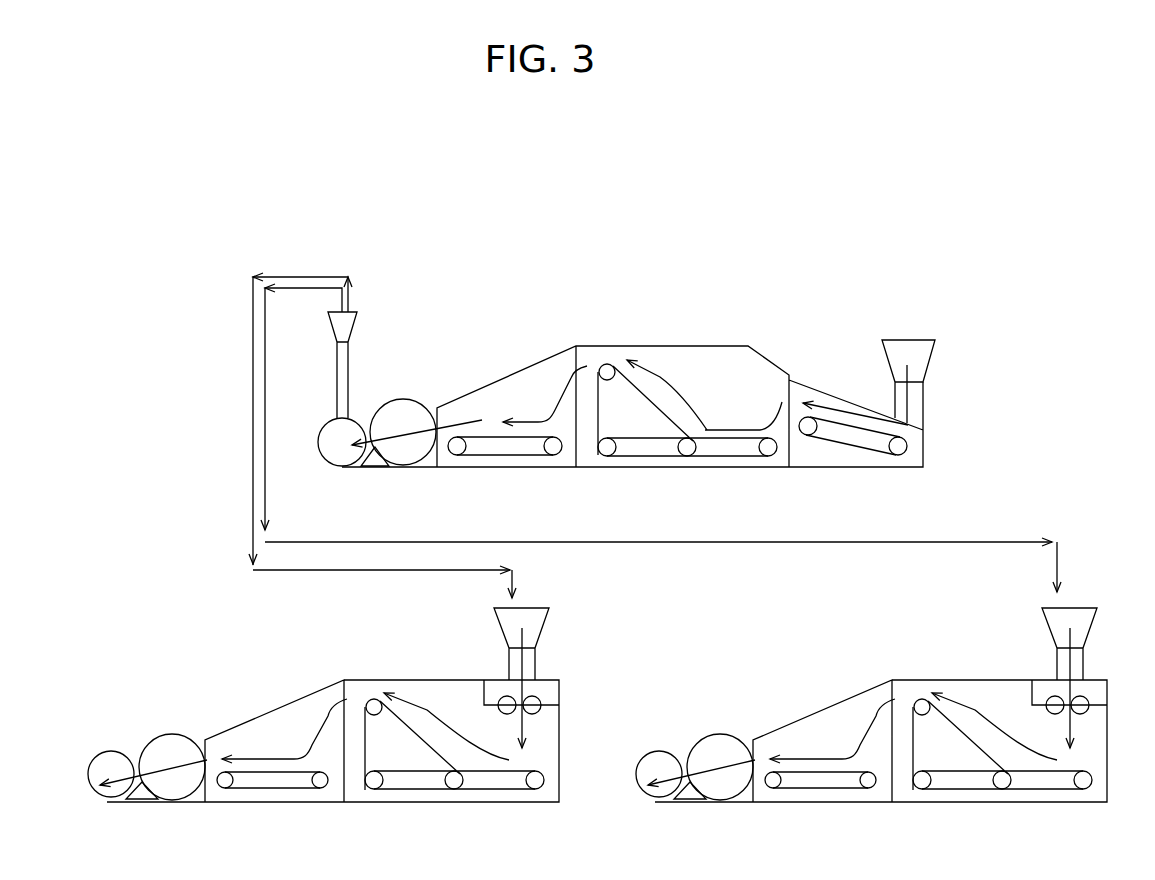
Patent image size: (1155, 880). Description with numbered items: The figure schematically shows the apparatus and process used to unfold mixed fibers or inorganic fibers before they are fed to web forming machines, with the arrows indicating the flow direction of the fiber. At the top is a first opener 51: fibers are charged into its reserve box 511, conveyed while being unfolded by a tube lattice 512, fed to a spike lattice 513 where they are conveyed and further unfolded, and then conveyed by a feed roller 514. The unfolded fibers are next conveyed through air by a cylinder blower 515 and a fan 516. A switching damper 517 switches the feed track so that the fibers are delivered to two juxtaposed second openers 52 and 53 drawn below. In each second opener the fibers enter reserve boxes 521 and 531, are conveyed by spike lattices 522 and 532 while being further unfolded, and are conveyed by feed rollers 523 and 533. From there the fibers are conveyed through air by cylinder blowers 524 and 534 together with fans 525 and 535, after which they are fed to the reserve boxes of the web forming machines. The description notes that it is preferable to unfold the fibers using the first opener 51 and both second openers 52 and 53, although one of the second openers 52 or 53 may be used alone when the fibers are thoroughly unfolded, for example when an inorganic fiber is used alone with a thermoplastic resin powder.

The first opener 51 is at (808, 297).
The reserve box 511 is at (930, 355).
The tube lattice 512 is at (852, 447).
The spike lattice 513 is at (637, 445).
The feed roller 514 is at (507, 445).
The cylinder blower 515 is at (402, 452).
The fan 516 is at (330, 440).
The switching damper 517 is at (348, 338).
The second opener 52 is at (943, 640).
The reserve box 521 is at (1058, 635).
The spike lattice 522 is at (967, 777).
The feed roller 523 is at (835, 777).
The cylinder blower 524 is at (730, 783).
The fan 525 is at (653, 800).
The second opener 53 is at (267, 658).
The reserve box 531 is at (513, 637).
The spike lattice 532 is at (408, 785).
The feed roller 533 is at (278, 782).
The cylinder blower 534 is at (173, 788).
The fan 535 is at (110, 775).